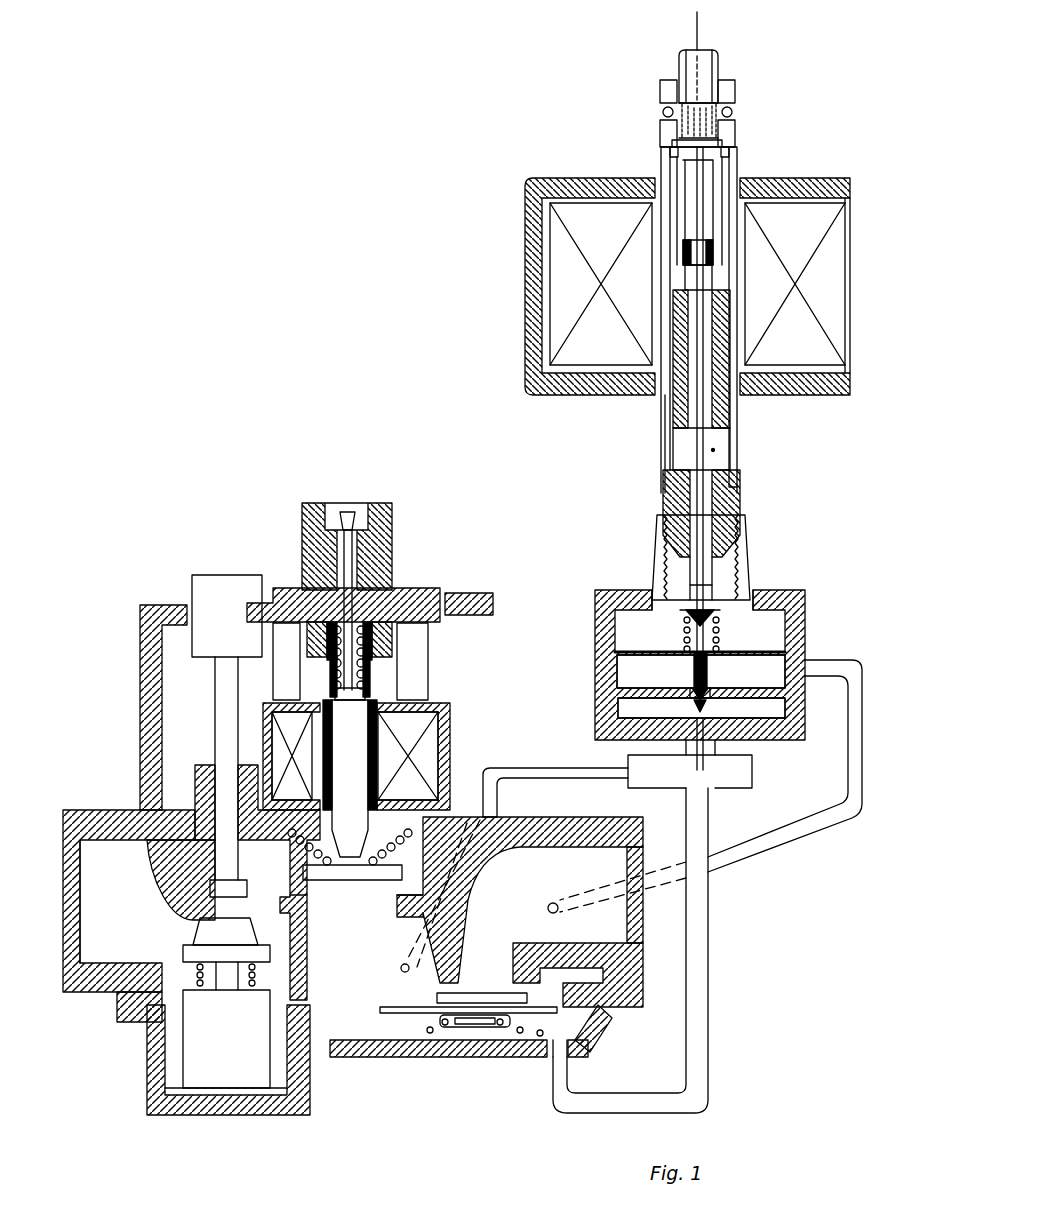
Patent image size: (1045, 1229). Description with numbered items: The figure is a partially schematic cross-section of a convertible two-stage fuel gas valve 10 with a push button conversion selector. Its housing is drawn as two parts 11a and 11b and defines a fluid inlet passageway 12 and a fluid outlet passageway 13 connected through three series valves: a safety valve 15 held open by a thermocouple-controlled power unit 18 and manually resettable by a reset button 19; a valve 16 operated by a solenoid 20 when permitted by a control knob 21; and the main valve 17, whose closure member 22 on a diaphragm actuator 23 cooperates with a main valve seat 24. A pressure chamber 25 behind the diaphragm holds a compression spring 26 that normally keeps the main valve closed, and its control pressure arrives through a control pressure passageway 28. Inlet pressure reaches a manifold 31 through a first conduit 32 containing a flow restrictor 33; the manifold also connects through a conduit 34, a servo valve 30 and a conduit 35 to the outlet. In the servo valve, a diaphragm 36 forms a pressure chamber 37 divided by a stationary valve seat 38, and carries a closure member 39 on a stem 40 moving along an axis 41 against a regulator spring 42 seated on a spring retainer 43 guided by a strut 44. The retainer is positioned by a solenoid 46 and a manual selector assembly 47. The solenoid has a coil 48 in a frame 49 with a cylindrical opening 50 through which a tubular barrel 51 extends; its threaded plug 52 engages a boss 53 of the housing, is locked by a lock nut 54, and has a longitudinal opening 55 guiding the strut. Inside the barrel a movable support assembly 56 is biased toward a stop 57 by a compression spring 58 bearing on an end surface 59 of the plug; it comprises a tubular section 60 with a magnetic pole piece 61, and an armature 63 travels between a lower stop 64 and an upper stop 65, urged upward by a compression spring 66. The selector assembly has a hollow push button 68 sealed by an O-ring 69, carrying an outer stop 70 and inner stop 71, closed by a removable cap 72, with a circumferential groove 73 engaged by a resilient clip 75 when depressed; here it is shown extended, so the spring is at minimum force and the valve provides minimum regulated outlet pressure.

The fuel gas valve 10 is at (483, 658).
The housing part 11a is at (105, 810).
The housing part 11b is at (808, 643).
The fluid inlet passageway 12 is at (128, 898).
The fluid outlet passageway 13 is at (597, 918).
The safety valve 15 is at (178, 935).
The valve 16 is at (332, 912).
The main valve 17 is at (470, 976).
The power unit 18 is at (205, 1057).
The reset button 19 is at (193, 585).
The solenoid 20 is at (272, 745).
The control knob 21 is at (392, 550).
The valve closure member 22 is at (530, 1060).
The diaphragm actuator 23 is at (643, 987).
The main valve seat 24 is at (420, 985).
The pressure chamber 25 is at (606, 1042).
The compression spring 26 is at (455, 1060).
The control pressure passageway 28 is at (712, 1006).
The servo valve 30 is at (588, 533).
The manifold 31 is at (668, 790).
The first conduit 32 is at (503, 796).
The flow restrictor 33 is at (516, 775).
The conduit 34 is at (720, 745).
The conduit 35 is at (760, 852).
The diaphragm 36 is at (722, 635).
The pressure chamber 37 is at (626, 672).
The stationary valve seat 38 is at (712, 695).
The valve closure member 39 is at (700, 716).
The stem 40 is at (720, 663).
The axis 41 is at (735, 168).
The regulator spring 42 is at (805, 607).
The spring retainer 43 is at (712, 587).
The strut 44 is at (748, 577).
The solenoid 46 is at (495, 330).
The selector assembly 47 is at (630, 72).
The solenoid coil 48 is at (850, 300).
The frame 49 is at (527, 277).
The cylindrical opening 50 is at (668, 392).
The tubular barrel 51 is at (740, 450).
The externally threaded plug 52 is at (664, 500).
The internally threaded boss 53 is at (750, 530).
The lock nut 54 is at (740, 508).
The longitudinal opening 55 is at (693, 582).
The movable support assembly 56 is at (755, 243).
The stop 57 is at (668, 156).
The compression spring 58 is at (685, 452).
The end surface 59 is at (728, 462).
The tubular section 60 is at (668, 168).
The cylindrical magnetic pole piece 61 is at (735, 410).
The solenoid armature 63 is at (735, 176).
The lower stop 64 is at (713, 262).
The upper stop 65 is at (721, 144).
The compression spring 66 is at (682, 262).
The hollow push button 68 is at (720, 66).
The O-ring seal 69 is at (720, 126).
The outer stop 70 is at (665, 140).
The inner stop 71 is at (727, 108).
The removable cap 72 is at (703, 52).
The circumferential groove 73 is at (719, 86).
The resilient clip 75 is at (735, 116).